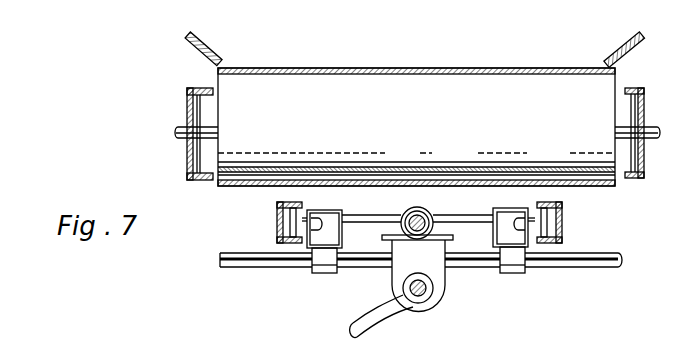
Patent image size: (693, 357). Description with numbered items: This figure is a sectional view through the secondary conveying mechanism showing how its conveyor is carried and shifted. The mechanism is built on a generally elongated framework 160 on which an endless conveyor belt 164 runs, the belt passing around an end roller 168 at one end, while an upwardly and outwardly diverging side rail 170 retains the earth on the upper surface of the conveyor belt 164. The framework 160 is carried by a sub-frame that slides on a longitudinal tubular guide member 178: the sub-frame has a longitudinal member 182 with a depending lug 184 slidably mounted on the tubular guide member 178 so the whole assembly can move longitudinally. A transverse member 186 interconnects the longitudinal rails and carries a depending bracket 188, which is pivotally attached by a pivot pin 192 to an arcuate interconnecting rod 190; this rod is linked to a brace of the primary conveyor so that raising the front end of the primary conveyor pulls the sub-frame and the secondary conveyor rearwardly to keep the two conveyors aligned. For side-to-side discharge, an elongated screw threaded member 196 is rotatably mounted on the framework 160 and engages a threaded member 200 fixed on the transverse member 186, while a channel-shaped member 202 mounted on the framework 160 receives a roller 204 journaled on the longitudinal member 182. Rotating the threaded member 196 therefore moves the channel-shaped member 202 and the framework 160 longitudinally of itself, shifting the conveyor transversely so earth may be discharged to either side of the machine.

The framework 160 is at (645, 90).
The endless conveyor belt 164 is at (478, 67).
The end roller 168 is at (532, 85).
The side rail 170 is at (624, 58).
The tubular guide member 178 is at (612, 267).
The longitudinal member 182 is at (527, 247).
The depending lug 184 is at (513, 262).
The transverse member 186 is at (468, 223).
The depending bracket 188 is at (400, 277).
The arcuate interconnecting rod 190 is at (350, 324).
The pivot pin 192 is at (427, 295).
The elongated screw threaded member 196 is at (413, 212).
The threaded member 200 is at (423, 212).
The channel-shaped member 202 is at (562, 222).
The roller 204 is at (548, 203).